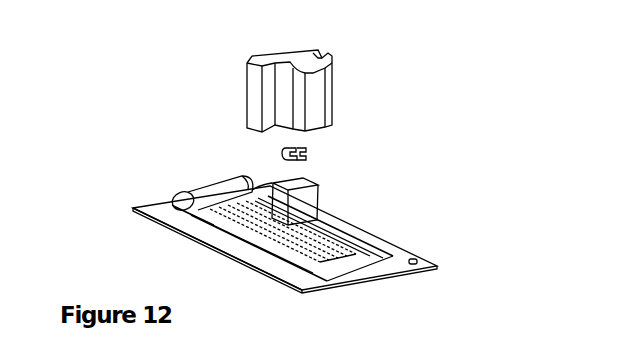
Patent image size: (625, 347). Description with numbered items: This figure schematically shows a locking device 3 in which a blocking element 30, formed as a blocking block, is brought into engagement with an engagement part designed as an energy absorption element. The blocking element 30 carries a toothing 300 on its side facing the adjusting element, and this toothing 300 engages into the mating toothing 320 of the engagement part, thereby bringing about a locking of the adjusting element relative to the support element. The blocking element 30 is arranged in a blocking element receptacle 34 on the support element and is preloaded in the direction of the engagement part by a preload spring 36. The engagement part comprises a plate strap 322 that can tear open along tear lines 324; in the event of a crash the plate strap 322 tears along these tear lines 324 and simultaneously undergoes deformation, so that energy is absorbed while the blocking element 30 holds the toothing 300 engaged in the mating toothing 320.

The locking device 3 is at (402, 101).
The blocking element 30 is at (300, 200).
The blocking element receptacle 34 is at (307, 98).
The preload spring 36 is at (308, 154).
The toothing 300 is at (198, 224).
The mating toothing 320 is at (357, 245).
The plate strap 322 is at (172, 195).
The tear lines 324 is at (133, 207).